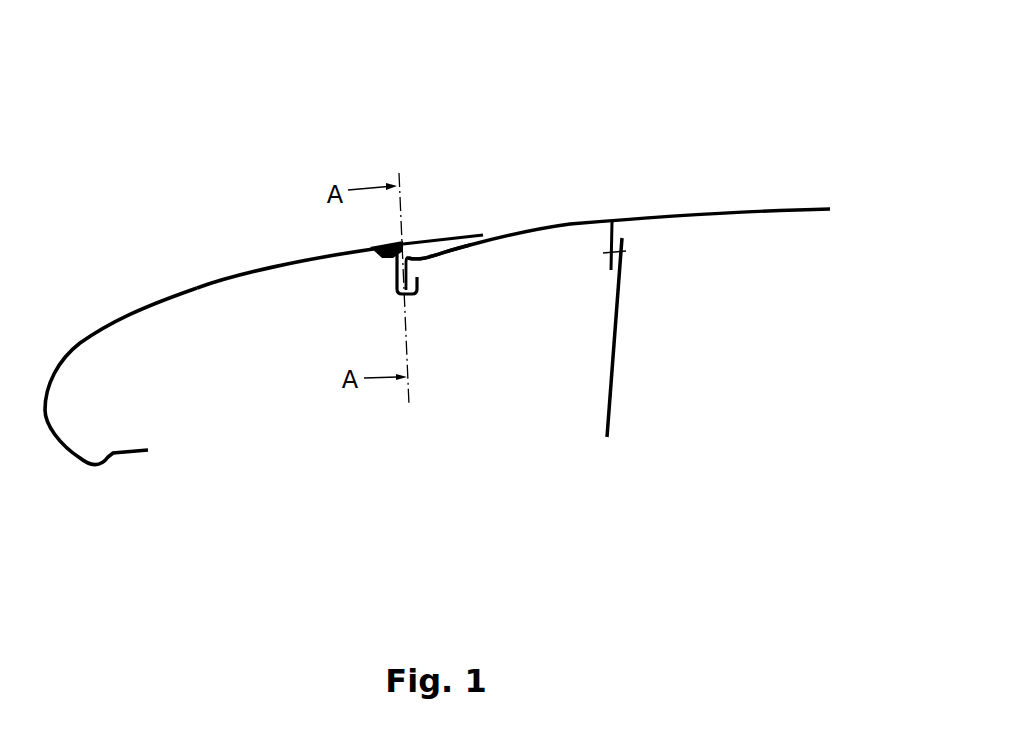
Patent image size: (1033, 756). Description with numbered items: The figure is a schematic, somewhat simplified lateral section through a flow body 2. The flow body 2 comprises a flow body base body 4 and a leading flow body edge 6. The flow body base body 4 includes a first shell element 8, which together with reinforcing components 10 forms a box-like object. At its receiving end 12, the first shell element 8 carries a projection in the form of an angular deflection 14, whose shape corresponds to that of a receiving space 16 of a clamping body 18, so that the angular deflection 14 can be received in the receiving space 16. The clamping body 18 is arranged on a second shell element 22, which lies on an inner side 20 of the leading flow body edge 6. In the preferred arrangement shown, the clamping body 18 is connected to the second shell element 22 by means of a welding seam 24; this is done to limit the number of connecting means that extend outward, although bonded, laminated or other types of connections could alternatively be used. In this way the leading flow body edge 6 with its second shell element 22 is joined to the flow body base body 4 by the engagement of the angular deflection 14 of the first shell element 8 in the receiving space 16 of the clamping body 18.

The flow body 2 is at (479, 127).
The flow body base body 4 is at (800, 247).
The leading flow body edge 6 is at (172, 332).
The first shell element 8 is at (688, 212).
The reinforcing components 10 is at (617, 373).
The receiving end 12 is at (451, 398).
The angular deflection 14 is at (408, 259).
The receiving space 16 is at (417, 278).
The clamping body 18 is at (396, 294).
The inner side 20 is at (232, 426).
The second shell element 22 is at (243, 268).
The welding seam 24 is at (385, 260).